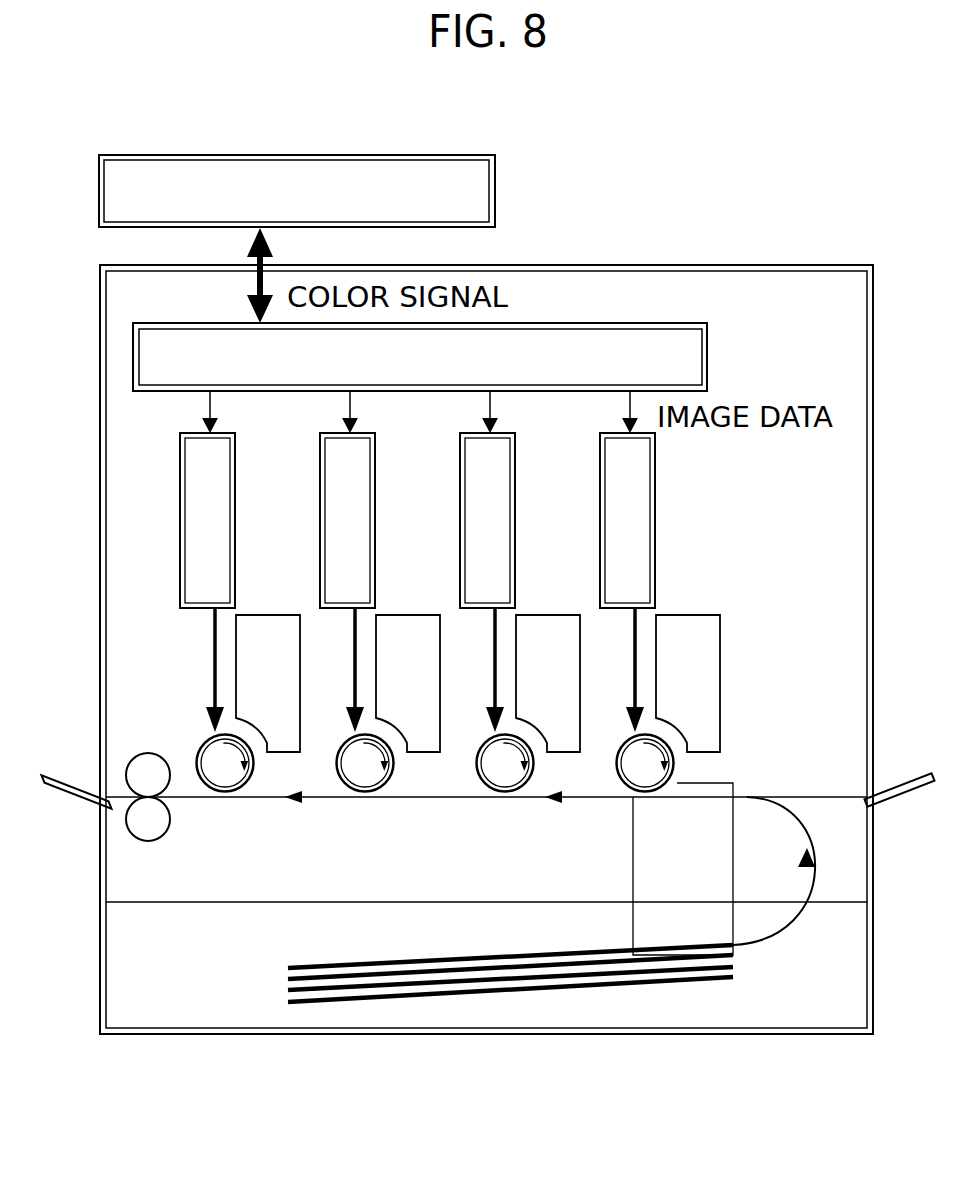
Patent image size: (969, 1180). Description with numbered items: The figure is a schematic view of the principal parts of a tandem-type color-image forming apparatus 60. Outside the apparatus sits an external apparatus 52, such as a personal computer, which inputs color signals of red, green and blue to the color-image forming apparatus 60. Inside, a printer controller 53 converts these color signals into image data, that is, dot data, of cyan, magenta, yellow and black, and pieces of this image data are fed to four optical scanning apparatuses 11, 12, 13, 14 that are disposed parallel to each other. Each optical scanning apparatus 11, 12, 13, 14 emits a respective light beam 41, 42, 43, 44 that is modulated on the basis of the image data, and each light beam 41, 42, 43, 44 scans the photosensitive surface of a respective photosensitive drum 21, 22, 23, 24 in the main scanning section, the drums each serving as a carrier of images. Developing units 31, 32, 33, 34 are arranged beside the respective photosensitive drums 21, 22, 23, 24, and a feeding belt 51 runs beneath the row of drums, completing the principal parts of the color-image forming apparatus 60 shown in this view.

The optical scanning apparatus 11 is at (195, 488).
The optical scanning apparatus 12 is at (335, 488).
The optical scanning apparatus 13 is at (475, 488).
The optical scanning apparatus 14 is at (615, 488).
The photosensitive drum 21 is at (232, 780).
The photosensitive drum 22 is at (372, 780).
The photosensitive drum 23 is at (512, 780).
The photosensitive drum 24 is at (652, 780).
The developing unit 31 is at (275, 640).
The developing unit 32 is at (415, 640).
The developing unit 33 is at (555, 640).
The developing unit 34 is at (695, 640).
The light beam 41 is at (199, 670).
The light beam 42 is at (340, 670).
The light beam 43 is at (479, 670).
The light beam 44 is at (619, 670).
The feeding belt 51 is at (780, 808).
The external apparatus 52 is at (477, 193).
The printer controller 53 is at (687, 357).
The color-image forming apparatus 60 is at (748, 266).